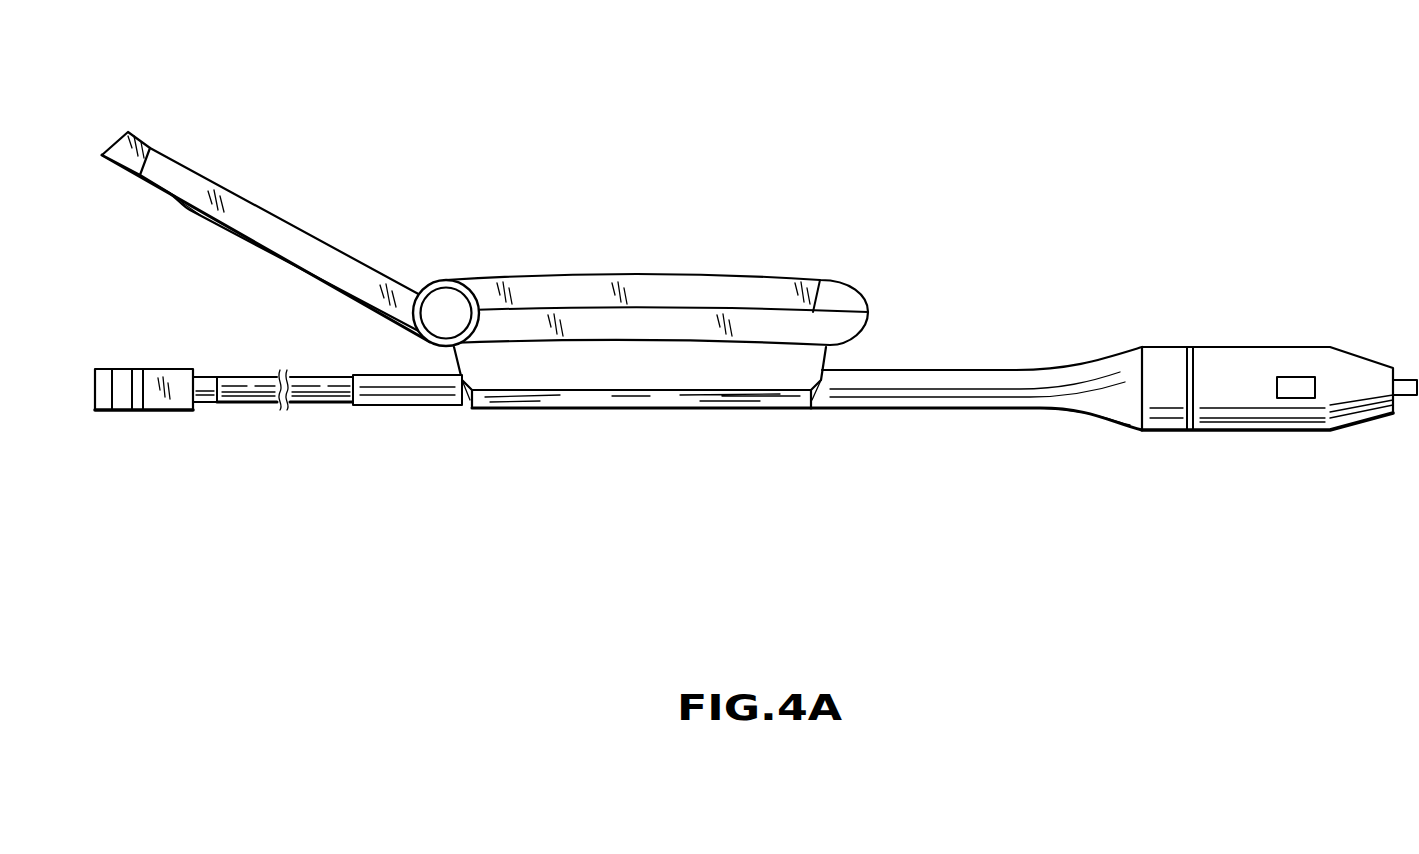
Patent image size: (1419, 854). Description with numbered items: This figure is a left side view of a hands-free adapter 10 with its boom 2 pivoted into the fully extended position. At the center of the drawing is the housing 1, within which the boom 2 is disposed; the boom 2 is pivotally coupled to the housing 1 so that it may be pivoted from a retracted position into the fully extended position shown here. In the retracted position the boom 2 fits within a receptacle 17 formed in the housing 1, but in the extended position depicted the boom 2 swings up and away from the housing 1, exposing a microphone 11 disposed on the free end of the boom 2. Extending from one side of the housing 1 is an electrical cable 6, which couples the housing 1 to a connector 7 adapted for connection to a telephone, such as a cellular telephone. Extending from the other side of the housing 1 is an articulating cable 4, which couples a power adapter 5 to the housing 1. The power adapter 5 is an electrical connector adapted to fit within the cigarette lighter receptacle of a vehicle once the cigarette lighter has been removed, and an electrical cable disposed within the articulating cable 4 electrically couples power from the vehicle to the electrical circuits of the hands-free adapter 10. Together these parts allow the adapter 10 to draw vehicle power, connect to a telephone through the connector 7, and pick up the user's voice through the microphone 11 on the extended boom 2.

The housing 1 is at (560, 400).
The boom 2 is at (297, 233).
The articulating cable 4 is at (990, 368).
The power adapter 5 is at (1277, 345).
The electrical cable 6 is at (267, 403).
The connector 7 is at (147, 368).
The hands-free adapter 10 is at (808, 88).
The microphone 11 is at (142, 138).
The receptacle 17 is at (728, 292).